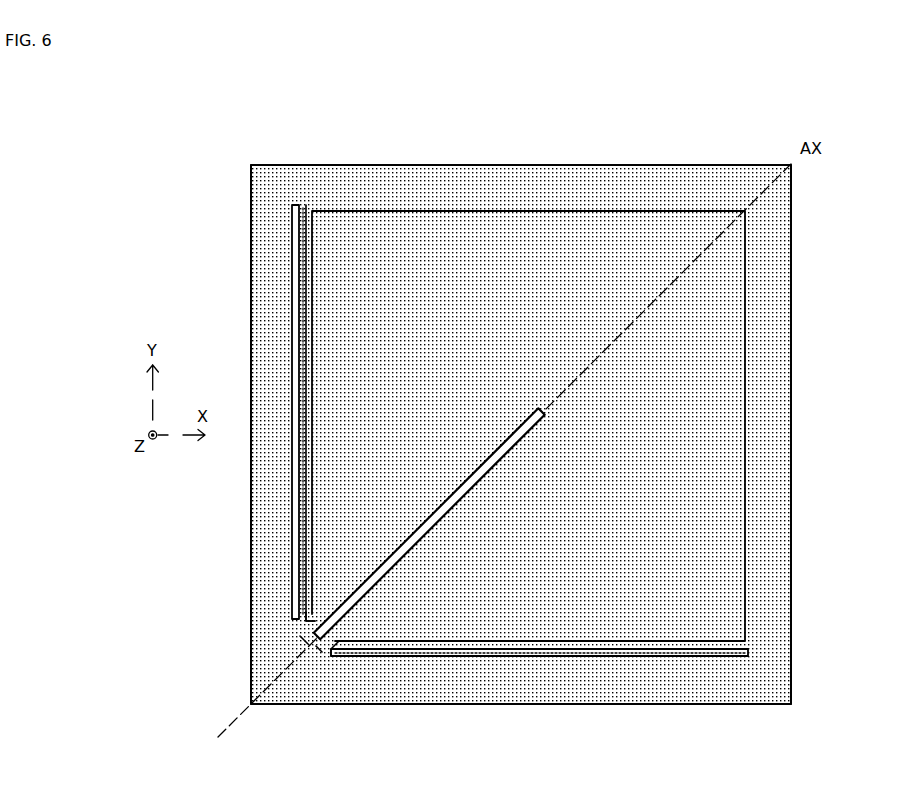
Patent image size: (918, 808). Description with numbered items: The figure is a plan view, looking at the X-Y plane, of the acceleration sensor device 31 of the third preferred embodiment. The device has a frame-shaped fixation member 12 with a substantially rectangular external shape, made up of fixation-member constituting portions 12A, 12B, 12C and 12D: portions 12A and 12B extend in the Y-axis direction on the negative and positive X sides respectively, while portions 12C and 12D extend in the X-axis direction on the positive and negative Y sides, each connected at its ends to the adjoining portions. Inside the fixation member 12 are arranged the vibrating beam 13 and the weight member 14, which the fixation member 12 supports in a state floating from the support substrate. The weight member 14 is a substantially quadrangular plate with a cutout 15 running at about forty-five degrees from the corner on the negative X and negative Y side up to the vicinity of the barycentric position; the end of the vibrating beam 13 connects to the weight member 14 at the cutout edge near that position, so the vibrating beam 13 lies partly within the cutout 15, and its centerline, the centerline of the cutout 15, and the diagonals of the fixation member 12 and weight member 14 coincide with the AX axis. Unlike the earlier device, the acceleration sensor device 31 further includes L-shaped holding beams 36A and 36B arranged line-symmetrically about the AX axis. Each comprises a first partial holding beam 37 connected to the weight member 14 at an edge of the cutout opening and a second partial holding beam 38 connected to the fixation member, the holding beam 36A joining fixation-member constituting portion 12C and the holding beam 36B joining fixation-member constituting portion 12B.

The fixation member 12 is at (251, 163).
The fixation-member constituting portion 12A is at (251, 280).
The fixation-member constituting portion 12B is at (791, 291).
The fixation-member constituting portion 12C is at (650, 165).
The fixation-member constituting portion 12D is at (660, 704).
The vibrating beam 13 is at (302, 640).
The weight member 14 is at (535, 620).
The cutout 15 is at (318, 654).
The acceleration sensor device 31 is at (823, 112).
The holding beam 36A is at (294, 538).
The holding beam 36B is at (420, 660).
The first partial holding beam 37 is at (305, 612).
The second partial holding beam 38 is at (300, 480).